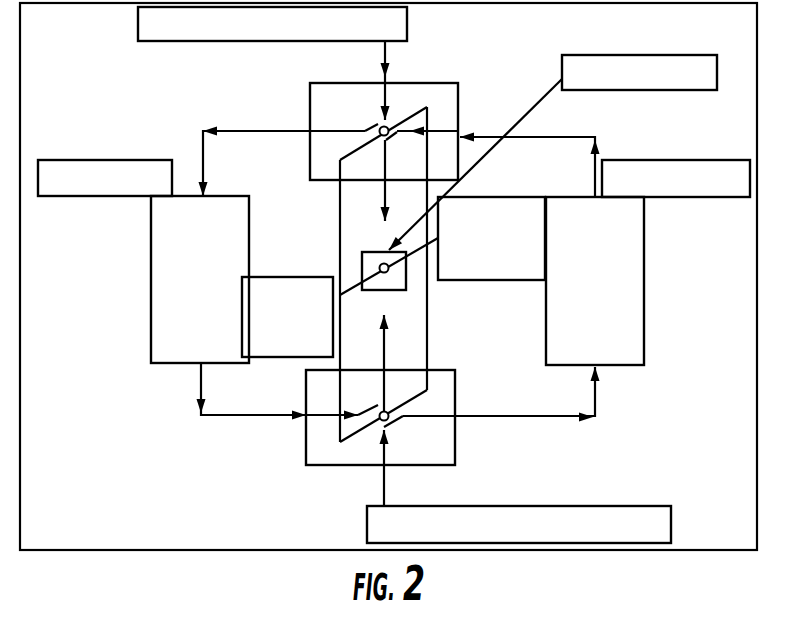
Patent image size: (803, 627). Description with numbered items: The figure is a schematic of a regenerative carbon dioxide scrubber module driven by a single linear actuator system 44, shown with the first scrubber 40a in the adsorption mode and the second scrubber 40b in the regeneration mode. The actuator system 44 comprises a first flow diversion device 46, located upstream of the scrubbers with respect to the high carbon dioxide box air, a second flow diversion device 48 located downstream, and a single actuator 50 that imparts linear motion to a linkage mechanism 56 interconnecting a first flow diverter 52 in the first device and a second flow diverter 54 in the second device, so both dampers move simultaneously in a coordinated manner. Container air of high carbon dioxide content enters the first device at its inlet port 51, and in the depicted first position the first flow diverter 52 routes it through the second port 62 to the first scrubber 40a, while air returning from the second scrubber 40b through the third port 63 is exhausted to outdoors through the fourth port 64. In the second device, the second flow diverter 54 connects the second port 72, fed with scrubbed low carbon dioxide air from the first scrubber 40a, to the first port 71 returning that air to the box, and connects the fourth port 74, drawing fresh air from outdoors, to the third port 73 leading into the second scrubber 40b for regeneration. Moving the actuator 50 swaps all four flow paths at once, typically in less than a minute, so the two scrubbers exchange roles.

The actuator system 44 is at (276, 104).
The first scrubber 40a is at (150, 268).
The second scrubber 40b is at (645, 273).
The first flow diversion device 46 is at (441, 83).
The second flow diversion device 48 is at (456, 432).
The actuator 50 is at (362, 255).
The container air inlet line 51 is at (383, 88).
The first flow diverter 52 is at (407, 118).
The second flow diverter 54 is at (366, 444).
The linkage mechanism 56 is at (428, 302).
The second port 62 is at (310, 133).
The third port 63 is at (459, 125).
The fourth port 64 is at (385, 181).
The first port 71 is at (386, 376).
The second port 72 is at (306, 405).
The third port 73 is at (456, 412).
The fourth port 74 is at (390, 466).